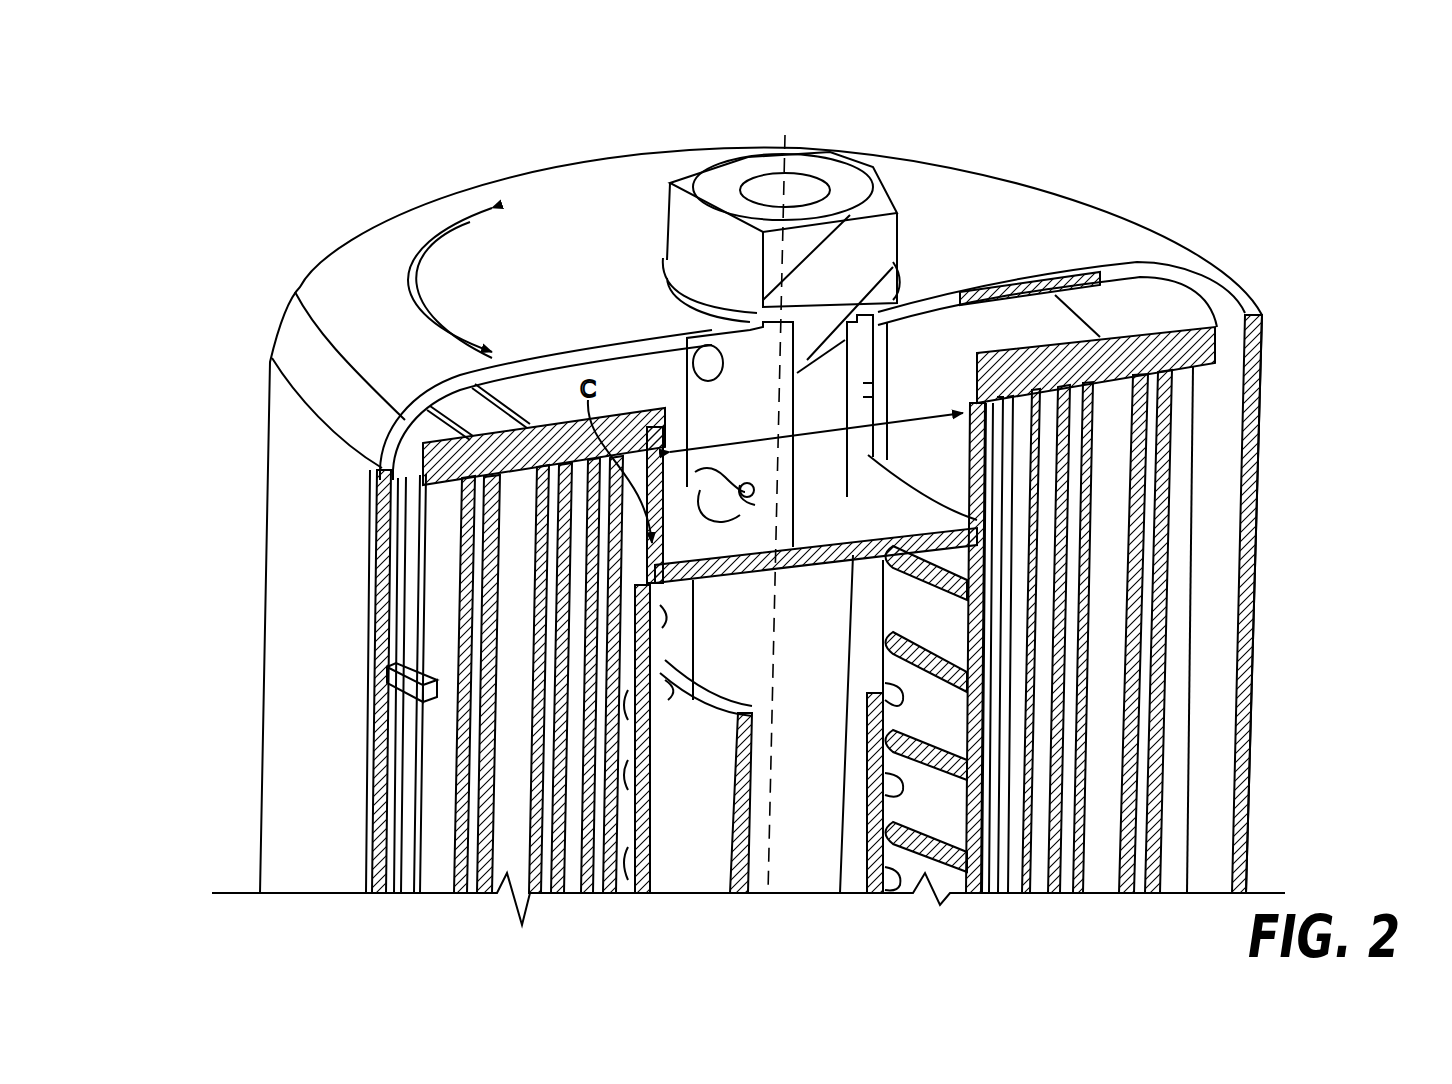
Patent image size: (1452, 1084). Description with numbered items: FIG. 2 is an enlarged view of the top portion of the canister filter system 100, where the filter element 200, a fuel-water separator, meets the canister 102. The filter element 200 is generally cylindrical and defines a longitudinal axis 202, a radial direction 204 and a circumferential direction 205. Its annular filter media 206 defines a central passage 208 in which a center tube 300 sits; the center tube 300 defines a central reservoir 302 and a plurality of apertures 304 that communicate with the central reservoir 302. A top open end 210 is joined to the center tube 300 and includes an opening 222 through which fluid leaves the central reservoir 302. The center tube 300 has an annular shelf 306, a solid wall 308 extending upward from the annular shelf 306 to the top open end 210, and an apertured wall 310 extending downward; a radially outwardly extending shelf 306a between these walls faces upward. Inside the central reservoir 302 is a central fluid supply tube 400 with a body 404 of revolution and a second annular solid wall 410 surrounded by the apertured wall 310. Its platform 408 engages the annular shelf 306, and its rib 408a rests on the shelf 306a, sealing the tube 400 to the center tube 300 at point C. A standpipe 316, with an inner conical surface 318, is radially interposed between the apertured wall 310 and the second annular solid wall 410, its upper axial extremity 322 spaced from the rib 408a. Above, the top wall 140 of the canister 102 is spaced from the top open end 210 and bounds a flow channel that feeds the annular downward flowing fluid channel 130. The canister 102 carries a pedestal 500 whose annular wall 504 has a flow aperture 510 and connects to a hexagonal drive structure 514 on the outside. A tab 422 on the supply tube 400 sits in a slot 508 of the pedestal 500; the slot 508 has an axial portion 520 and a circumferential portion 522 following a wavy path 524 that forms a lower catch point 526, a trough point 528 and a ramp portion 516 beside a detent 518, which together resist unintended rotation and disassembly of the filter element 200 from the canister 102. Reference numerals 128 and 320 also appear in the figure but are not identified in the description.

The canister filter system 100 is at (1290, 118).
The canister 102 is at (360, 272).
The lower housing portion 128 is at (370, 817).
The downward flowing fluid channel 130 is at (400, 516).
The top wall 140 is at (594, 219).
The filter element 200 is at (1144, 314).
The longitudinal axis 202 is at (787, 187).
The radial direction 204 is at (1005, 345).
The circumferential direction 205 is at (415, 282).
The annular filter media 206 is at (1128, 697).
The central passage 208 is at (987, 483).
The top open end 210 is at (688, 395).
The opening 222 is at (913, 420).
The center tube 300 is at (636, 896).
The central reservoir 302 is at (960, 623).
The apertures 304 is at (653, 830).
The annular shelf 306 is at (387, 670).
The radially outwardly extending shelf 306a is at (985, 503).
The solid wall 308 is at (647, 540).
The apertured wall 310 is at (647, 703).
The standpipe 316 is at (687, 830).
The inner conical surface 318 is at (733, 793).
The base 320 is at (927, 873).
The upper axial extremity 322 is at (700, 700).
The central fluid supply tube 400 is at (780, 848).
The body of revolution 404 is at (853, 850).
The platform 408 is at (690, 583).
The radially outwardly extending rib 408a is at (1005, 455).
The second annular solid wall 410 is at (841, 724).
The tab 422 is at (754, 488).
The pedestal 500 is at (863, 358).
The annular wall 504 is at (740, 434).
The slot 508 is at (740, 485).
The flow aperture 510 is at (715, 365).
The drive structure 514 is at (713, 196).
The ramp portion 516 is at (757, 508).
The detent 518 is at (735, 522).
The axial portion 520 is at (692, 500).
The circumferential portion 522 is at (848, 406).
The wavy path 524 is at (705, 470).
The lower catch point 526 is at (740, 525).
The trough point 528 is at (765, 525).